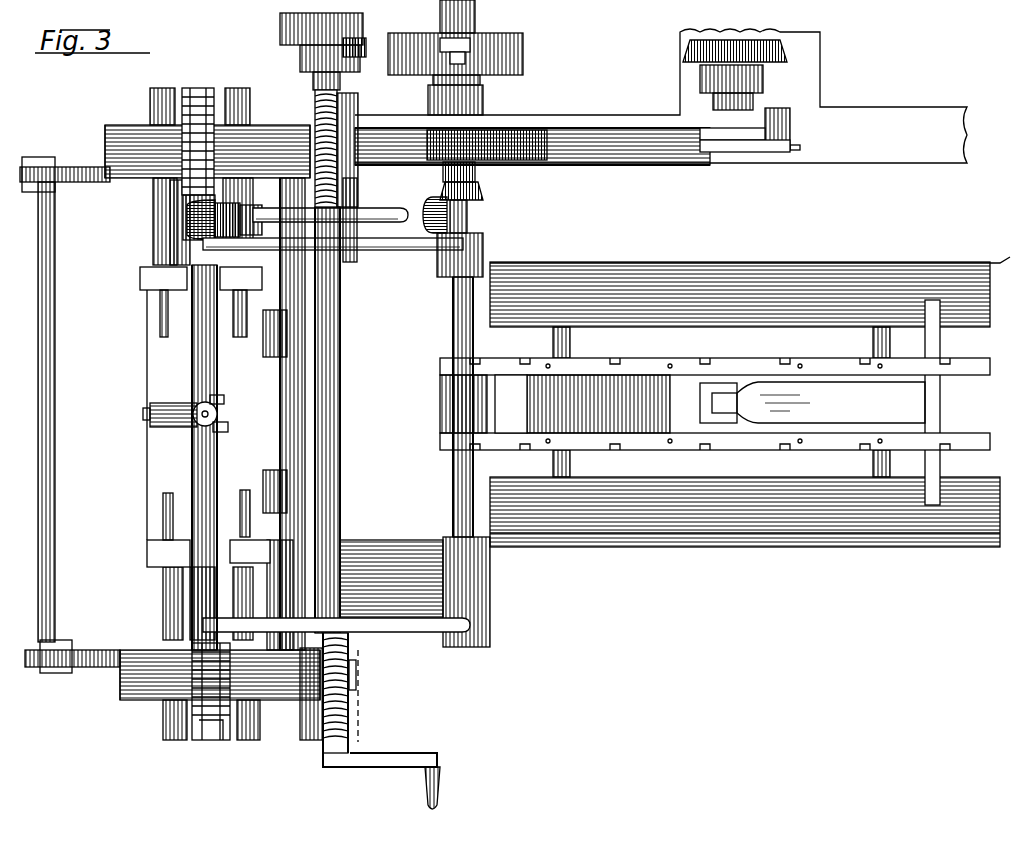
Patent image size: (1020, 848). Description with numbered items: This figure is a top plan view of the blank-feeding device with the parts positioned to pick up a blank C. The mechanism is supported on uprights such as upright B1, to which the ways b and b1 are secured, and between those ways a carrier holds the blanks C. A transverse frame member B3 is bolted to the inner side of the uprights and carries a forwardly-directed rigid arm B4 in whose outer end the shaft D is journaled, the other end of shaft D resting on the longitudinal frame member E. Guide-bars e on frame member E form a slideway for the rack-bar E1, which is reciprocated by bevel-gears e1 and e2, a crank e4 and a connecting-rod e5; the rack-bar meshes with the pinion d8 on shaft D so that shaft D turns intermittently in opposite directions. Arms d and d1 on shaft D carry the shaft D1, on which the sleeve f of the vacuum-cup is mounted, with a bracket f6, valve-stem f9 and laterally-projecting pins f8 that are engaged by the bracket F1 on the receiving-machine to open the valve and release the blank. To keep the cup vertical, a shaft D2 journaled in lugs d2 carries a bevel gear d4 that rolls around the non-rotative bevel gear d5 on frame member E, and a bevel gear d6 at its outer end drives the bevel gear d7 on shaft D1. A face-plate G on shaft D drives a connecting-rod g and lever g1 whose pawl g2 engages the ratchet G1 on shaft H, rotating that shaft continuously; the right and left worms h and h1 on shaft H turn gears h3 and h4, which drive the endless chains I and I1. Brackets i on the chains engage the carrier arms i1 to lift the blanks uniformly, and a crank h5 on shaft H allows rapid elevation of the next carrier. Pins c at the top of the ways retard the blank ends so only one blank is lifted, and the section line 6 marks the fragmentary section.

The upright B1 is at (99, 168).
The blank C is at (157, 392).
The endless chain I1 is at (232, 118).
The bracket i is at (200, 112).
The carrier arm i1 is at (193, 210).
The beveled gear d7 is at (200, 232).
The beveled gear d6 is at (252, 210).
The arm d is at (360, 238).
The shaft D2 is at (358, 252).
The lug d2 is at (440, 277).
The pinion d8 is at (480, 166).
The non-rotative beveled gear d5 is at (480, 198).
The beveled gear d4 is at (452, 226).
The shaft D is at (453, 318).
The rack-bar E1 is at (520, 130).
The face-plate G is at (485, 36).
The connecting-rod g is at (452, 28).
The ratchet G1 is at (300, 18).
The lever g1 is at (373, 60).
The pawl g2 is at (357, 36).
The shaft H is at (335, 373).
The gear h3 is at (312, 98).
The worm h is at (352, 186).
The gear h4 is at (350, 702).
The worm h1 is at (358, 672).
The section line 6 is at (359, 703).
The crank h5 is at (437, 768).
The endless chain I is at (200, 702).
The transverse frame member B3 is at (300, 425).
The rigid arm B4 is at (421, 557).
The arm d1 is at (404, 633).
The way b1 is at (290, 340).
The way b is at (150, 268).
The pin c is at (160, 332).
The shaft D1 is at (203, 468).
The sleeve f is at (210, 404).
The bracket f6 is at (165, 423).
The valve-stem f9 is at (218, 416).
The pin f8 is at (215, 434).
The guide-bar e is at (585, 117).
The longitudinal frame member E is at (562, 167).
The bevel-gear e2 is at (690, 56).
The bevel-gear e1 is at (790, 48).
The crank e4 is at (792, 115).
The connecting-rod e5 is at (705, 152).
The bracket F1 is at (715, 404).